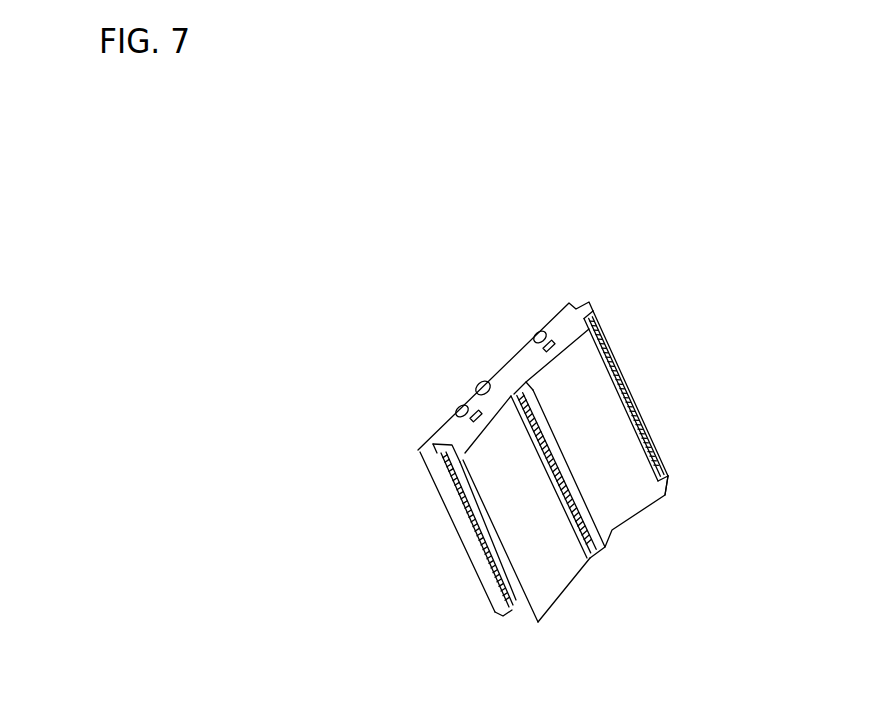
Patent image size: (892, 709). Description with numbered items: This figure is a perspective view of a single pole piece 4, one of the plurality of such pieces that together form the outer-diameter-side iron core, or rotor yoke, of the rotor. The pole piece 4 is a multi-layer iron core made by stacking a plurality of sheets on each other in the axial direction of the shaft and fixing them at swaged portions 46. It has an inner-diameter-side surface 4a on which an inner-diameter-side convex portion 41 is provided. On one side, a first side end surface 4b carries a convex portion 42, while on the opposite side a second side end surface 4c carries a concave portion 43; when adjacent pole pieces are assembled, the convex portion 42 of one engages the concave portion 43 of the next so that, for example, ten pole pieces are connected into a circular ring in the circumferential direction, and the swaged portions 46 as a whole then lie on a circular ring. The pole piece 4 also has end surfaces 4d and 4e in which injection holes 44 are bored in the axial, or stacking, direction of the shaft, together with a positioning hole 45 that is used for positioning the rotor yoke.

The pole piece 4 is at (387, 207).
The inner-diameter-side convex portion 41 is at (552, 447).
The convex portion 42 is at (590, 300).
The concave portion 43 is at (447, 440).
The injection hole 44 is at (457, 405).
The positioning hole 45 is at (478, 382).
The swaged portion 46 is at (474, 413).
The inner-diameter-side surface 4a is at (556, 564).
The first side end surface 4b is at (652, 442).
The second side end surface 4c is at (472, 563).
The end surface 4d is at (500, 366).
The end surface 4e is at (615, 531).